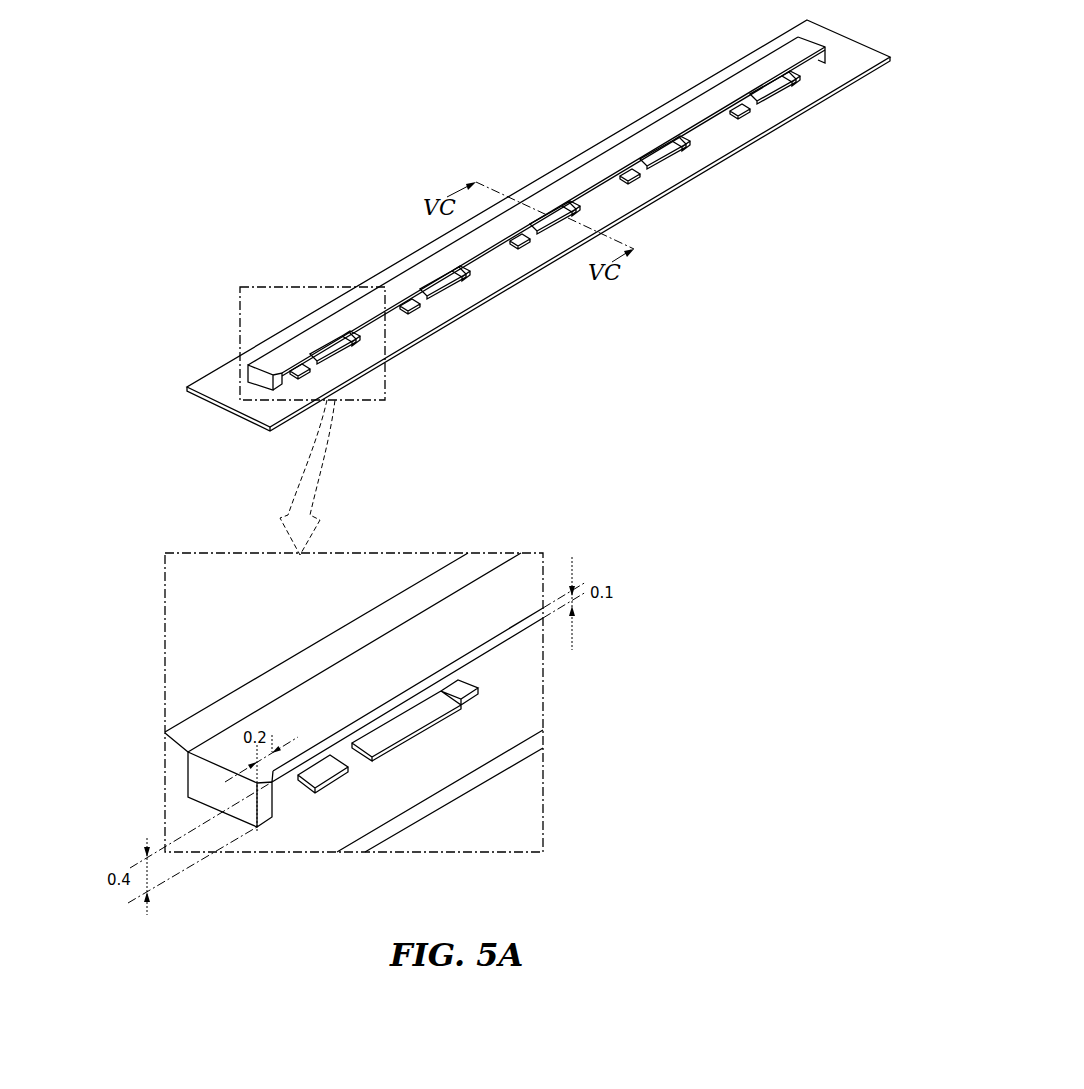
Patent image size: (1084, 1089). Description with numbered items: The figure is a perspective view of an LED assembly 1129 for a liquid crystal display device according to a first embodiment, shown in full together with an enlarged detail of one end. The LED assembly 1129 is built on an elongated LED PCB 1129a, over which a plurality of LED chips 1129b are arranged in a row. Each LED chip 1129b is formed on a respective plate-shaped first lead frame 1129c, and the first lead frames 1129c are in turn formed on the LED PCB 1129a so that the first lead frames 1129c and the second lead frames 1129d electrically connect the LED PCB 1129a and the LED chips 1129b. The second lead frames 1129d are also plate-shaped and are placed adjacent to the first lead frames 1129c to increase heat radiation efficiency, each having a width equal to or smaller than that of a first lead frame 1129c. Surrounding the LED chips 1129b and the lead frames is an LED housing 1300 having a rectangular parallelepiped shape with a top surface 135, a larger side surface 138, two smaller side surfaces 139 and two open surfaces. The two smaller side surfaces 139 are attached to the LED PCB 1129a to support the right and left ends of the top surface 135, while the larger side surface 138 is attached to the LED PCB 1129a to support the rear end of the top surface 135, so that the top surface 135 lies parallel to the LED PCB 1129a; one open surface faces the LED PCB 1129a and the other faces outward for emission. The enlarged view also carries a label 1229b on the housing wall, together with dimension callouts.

The LED assembly 1129 is at (500, 64).
The LED PCB 1129a is at (741, 152).
The LED chip 1129b is at (452, 284).
The first lead frame 1129c is at (567, 218).
The second lead frame 1129d is at (513, 243).
The LED housing 1300 is at (246, 378).
The top surface 135 is at (315, 703).
The larger side surface 138 is at (249, 703).
The smaller side surface 139 is at (203, 773).
The contact surface 1229b is at (405, 720).